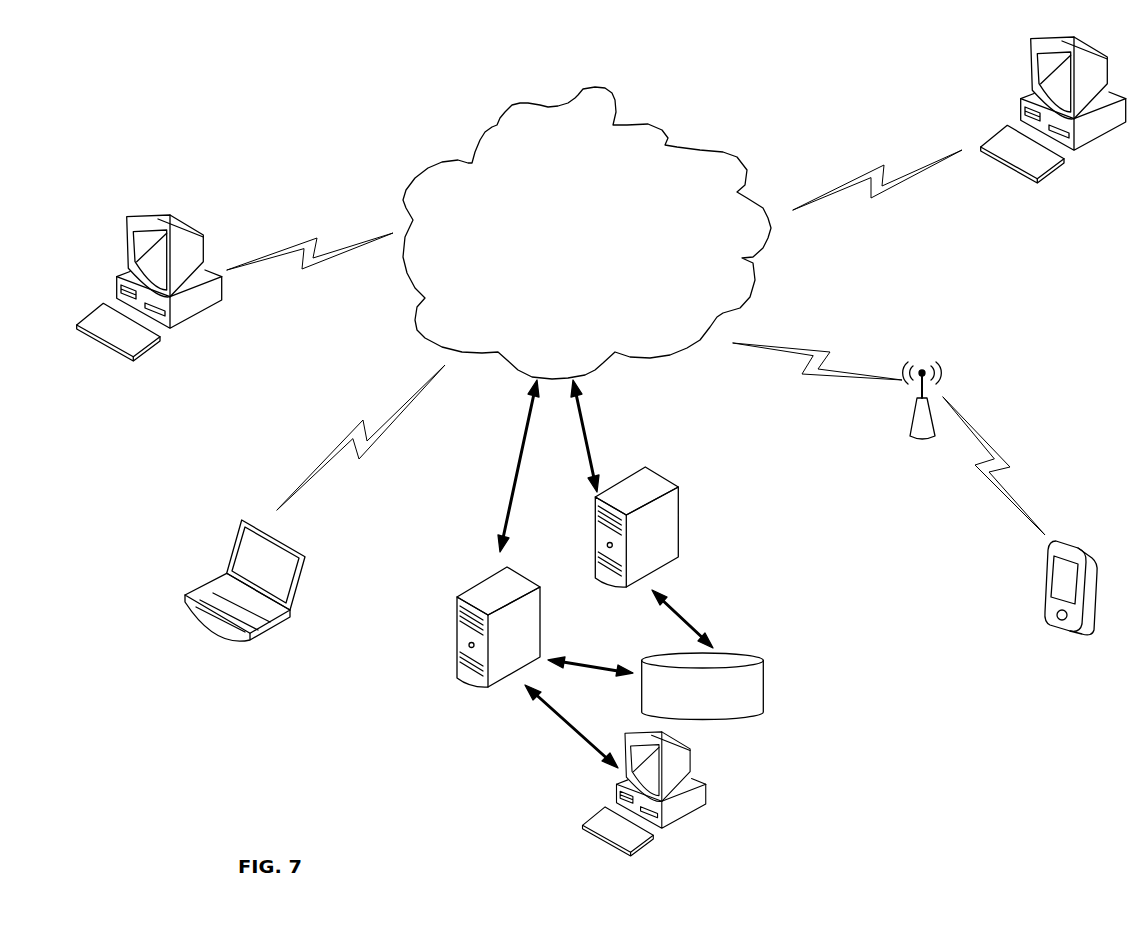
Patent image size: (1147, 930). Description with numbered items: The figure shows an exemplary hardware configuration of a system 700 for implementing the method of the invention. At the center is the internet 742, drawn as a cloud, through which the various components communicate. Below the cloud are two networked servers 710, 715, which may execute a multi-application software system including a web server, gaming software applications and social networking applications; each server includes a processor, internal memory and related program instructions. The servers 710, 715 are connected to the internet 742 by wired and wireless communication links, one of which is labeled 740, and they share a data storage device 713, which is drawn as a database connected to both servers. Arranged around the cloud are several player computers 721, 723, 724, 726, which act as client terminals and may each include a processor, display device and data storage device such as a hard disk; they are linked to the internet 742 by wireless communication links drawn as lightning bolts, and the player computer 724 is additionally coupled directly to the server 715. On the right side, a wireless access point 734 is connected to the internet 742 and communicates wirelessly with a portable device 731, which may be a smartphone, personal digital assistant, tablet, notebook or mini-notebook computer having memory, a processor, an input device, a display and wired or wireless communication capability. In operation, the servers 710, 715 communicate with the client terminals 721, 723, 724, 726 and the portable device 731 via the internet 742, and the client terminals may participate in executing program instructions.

The system 700 is at (284, 835).
The internet 742 is at (652, 233).
The wired and wireless communication link 740 is at (590, 430).
The player computer 723 is at (149, 271).
The player computer 726 is at (1053, 110).
The player computer 724 is at (662, 794).
The player computer 721 is at (236, 580).
The networked server 715 is at (498, 627).
The networked server 710 is at (636, 527).
The data storage device 713 is at (703, 686).
The wireless access point 734 is at (902, 400).
The portable device 731 is at (1038, 588).